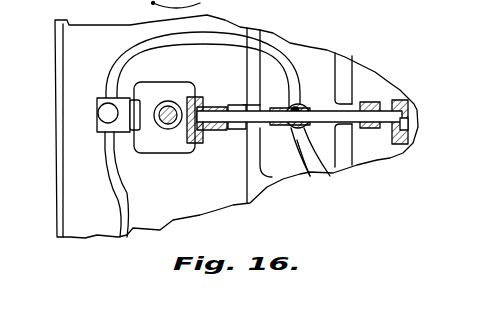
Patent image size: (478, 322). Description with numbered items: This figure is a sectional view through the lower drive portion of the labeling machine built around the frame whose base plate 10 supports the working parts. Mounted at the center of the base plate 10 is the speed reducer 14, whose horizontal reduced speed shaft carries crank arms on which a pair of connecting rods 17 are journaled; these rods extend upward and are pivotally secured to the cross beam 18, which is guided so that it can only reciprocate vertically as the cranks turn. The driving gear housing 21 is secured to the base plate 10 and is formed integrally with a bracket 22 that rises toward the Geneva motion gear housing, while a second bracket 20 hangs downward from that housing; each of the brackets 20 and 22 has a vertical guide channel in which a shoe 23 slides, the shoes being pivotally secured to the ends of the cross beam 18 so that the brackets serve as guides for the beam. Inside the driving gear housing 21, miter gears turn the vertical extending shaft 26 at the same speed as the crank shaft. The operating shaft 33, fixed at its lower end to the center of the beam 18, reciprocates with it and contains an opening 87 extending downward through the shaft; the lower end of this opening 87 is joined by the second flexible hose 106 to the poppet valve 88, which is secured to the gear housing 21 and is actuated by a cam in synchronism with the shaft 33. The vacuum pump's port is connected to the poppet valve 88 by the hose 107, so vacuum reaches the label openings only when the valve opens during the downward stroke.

The base plate 10 is at (236, 126).
The speed reducer 14 is at (332, 110).
The connecting rods 17 is at (215, 131).
The cross beam 18 is at (269, 126).
The bracket 20 is at (412, 122).
The driving gear housing 21 is at (179, 78).
The bracket 22 is at (199, 96).
The shoe 23 is at (196, 142).
The vertical extending shaft 26 is at (162, 128).
The operating shaft 33 is at (310, 177).
The opening 87 is at (333, 178).
The poppet valve 88 is at (97, 120).
The second flexible hose 106 is at (241, 38).
The hose 107 is at (120, 205).